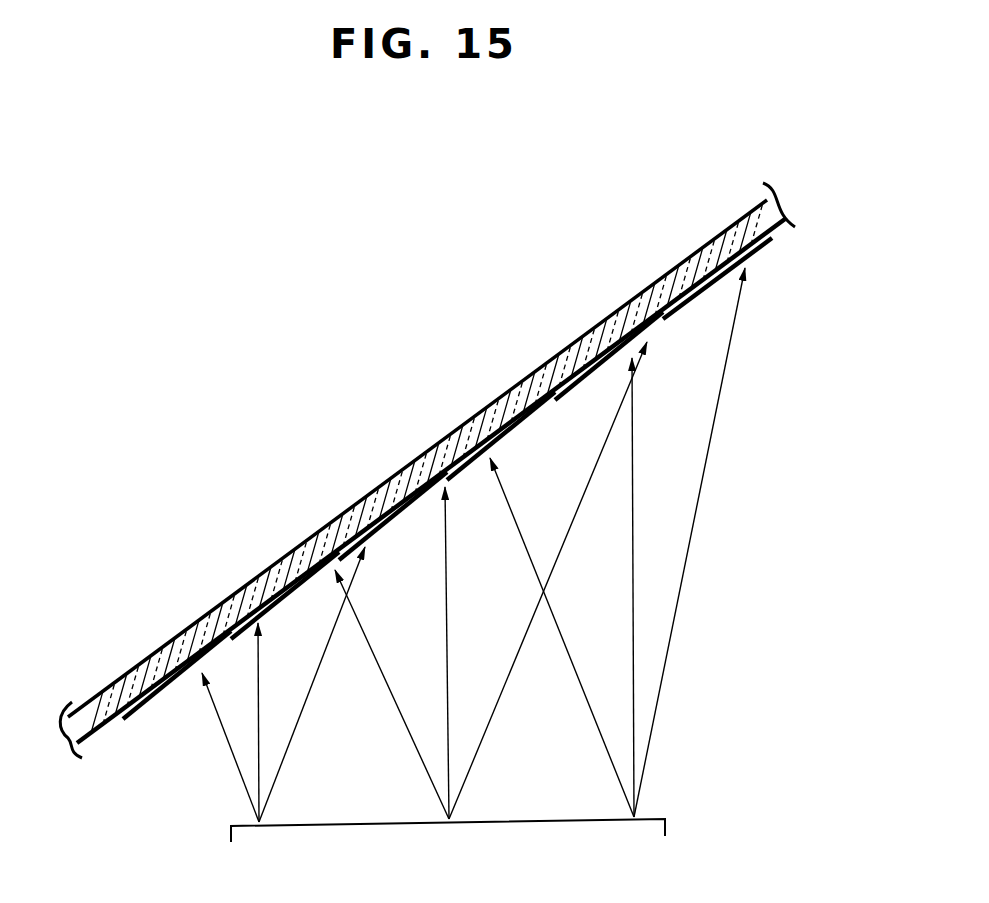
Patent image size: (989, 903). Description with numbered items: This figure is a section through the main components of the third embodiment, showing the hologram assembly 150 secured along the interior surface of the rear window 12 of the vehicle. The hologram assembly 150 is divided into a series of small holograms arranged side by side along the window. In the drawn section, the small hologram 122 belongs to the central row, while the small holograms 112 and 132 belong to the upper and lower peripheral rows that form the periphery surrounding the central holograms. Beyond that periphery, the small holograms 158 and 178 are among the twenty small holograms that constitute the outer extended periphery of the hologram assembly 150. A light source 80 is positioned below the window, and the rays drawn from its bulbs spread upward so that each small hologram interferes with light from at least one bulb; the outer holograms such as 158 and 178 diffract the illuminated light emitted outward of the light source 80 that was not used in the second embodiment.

The rear window 12 is at (683, 262).
The hologram assembly 150 is at (763, 254).
The small hologram 178 is at (141, 703).
The small hologram 132 is at (290, 596).
The small hologram 122 is at (507, 436).
The small hologram 112 is at (603, 366).
The small hologram 158 is at (711, 292).
The light source 80 is at (655, 817).